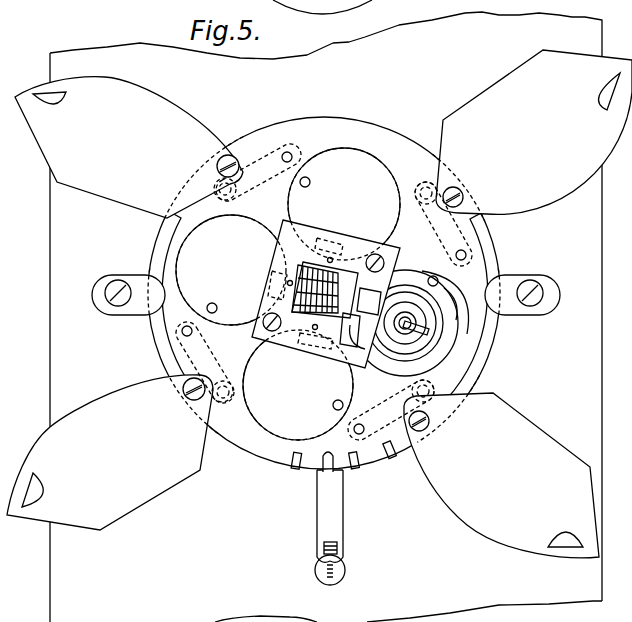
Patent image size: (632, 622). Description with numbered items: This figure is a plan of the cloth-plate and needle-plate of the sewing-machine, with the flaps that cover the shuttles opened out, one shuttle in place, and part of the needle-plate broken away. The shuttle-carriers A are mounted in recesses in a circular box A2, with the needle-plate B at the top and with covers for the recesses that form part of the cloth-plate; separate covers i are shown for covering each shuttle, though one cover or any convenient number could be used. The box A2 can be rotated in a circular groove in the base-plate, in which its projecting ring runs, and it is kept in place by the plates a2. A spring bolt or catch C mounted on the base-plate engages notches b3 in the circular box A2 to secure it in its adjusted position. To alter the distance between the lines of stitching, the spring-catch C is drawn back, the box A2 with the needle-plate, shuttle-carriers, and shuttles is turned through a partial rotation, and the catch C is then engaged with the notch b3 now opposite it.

The cover i is at (319, 304).
The shuttle-carrier A is at (417, 284).
The needle-plate B is at (288, 294).
The circular box A2 is at (324, 293).
The plate a2 is at (512, 318).
The notch b3 is at (393, 467).
The spring bolt or catch C is at (330, 518).